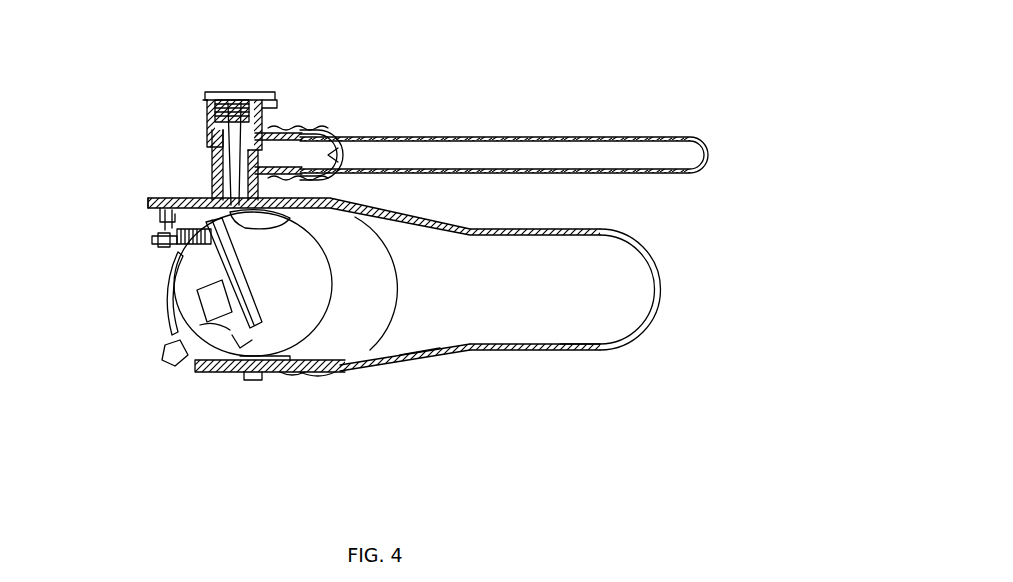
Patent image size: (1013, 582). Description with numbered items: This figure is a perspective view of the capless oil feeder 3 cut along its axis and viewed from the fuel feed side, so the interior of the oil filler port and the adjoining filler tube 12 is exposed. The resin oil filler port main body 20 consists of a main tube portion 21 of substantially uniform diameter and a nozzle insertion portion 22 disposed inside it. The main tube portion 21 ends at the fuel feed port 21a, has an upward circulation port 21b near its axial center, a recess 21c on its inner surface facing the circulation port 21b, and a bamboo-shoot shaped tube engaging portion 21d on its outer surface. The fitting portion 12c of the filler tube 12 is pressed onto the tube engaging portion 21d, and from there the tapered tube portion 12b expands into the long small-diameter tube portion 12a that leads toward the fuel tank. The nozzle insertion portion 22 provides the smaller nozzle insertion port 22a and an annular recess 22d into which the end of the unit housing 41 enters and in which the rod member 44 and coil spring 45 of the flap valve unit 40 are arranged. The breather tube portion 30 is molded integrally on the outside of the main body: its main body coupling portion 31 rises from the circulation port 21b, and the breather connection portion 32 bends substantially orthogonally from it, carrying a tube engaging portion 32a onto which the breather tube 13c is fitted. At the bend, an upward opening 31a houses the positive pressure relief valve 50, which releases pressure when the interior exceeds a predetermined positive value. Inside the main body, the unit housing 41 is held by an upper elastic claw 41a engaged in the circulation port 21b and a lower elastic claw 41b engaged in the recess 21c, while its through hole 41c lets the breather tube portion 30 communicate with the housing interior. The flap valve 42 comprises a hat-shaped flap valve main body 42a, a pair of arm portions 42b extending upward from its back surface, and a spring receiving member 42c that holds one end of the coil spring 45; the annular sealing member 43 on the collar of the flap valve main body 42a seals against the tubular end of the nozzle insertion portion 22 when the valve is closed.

The capless oil feeder 3 is at (592, 95).
The filler tube 12 is at (498, 350).
The small-diameter tube portion 12a is at (572, 350).
The tapered tube portion 12b is at (421, 353).
The fitting portion 12c is at (293, 375).
The breather tube 13c is at (628, 137).
The oil filler port main body 20 is at (147, 198).
The main tube portion 21 is at (186, 200).
The fuel feed port 21a is at (387, 350).
The circulation port 21b is at (214, 195).
The recess 21c is at (238, 373).
The tube engaging portion 21d is at (318, 377).
The nozzle insertion portion 22 is at (162, 211).
The nozzle insertion port 22a is at (166, 266).
The annular recess 22d is at (165, 222).
The breather tube portion 30 is at (340, 150).
The main body coupling portion 31 is at (207, 125).
The opening 31a is at (214, 94).
The breather connection portion 32 is at (291, 130).
The tube engaging portion 32a is at (318, 128).
The flap valve unit 40 is at (324, 343).
The unit housing 41 is at (266, 362).
The elastic claw 41a is at (238, 165).
The elastic claw 41b is at (250, 362).
The through hole 41c is at (229, 130).
The flap valve 42 is at (178, 305).
The flap valve main body 42a is at (206, 325).
The arm portions 42b is at (186, 292).
The spring receiving member 42c is at (232, 333).
The sealing member 43 is at (186, 336).
The rod member 44 is at (152, 240).
The coil spring 45 is at (186, 244).
The positive pressure relief valve 50 is at (203, 96).